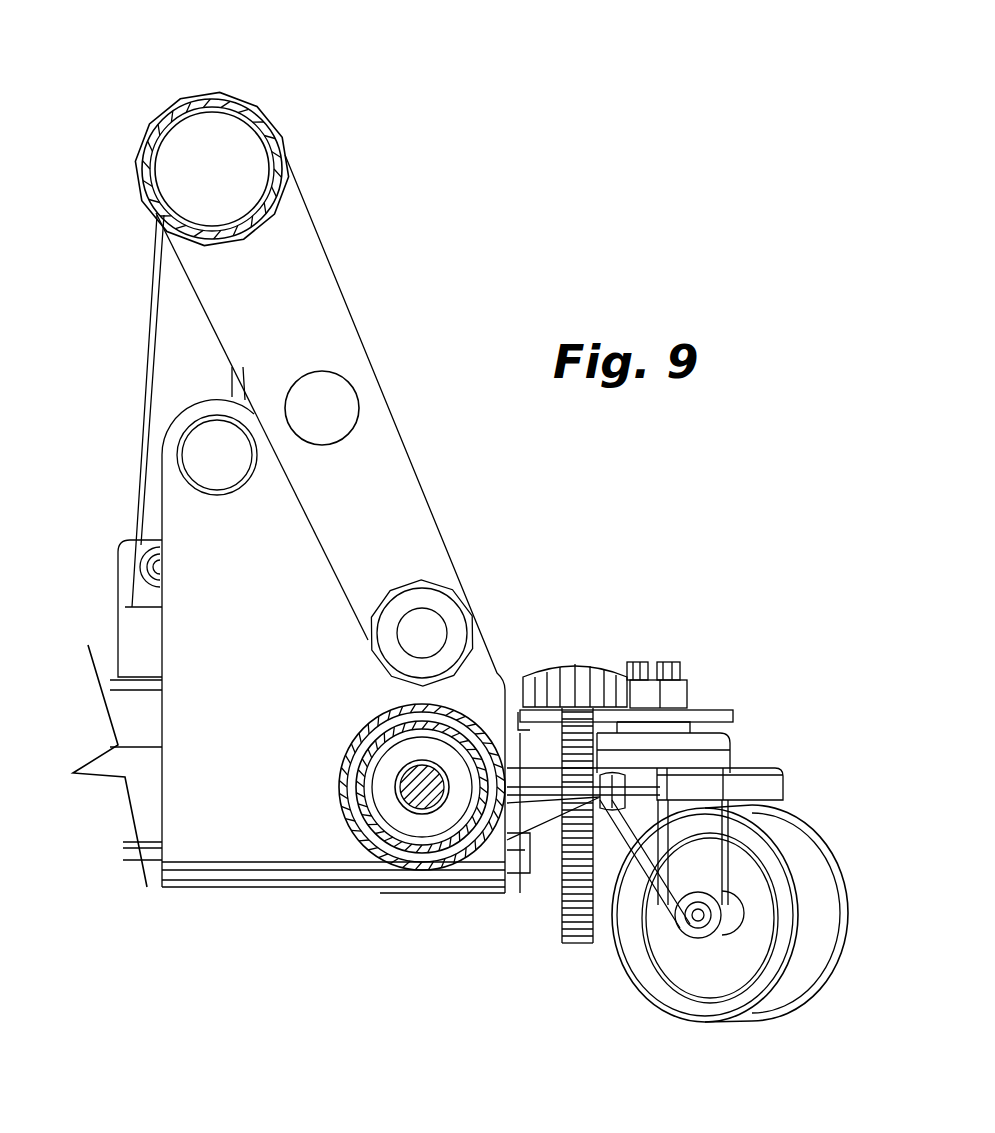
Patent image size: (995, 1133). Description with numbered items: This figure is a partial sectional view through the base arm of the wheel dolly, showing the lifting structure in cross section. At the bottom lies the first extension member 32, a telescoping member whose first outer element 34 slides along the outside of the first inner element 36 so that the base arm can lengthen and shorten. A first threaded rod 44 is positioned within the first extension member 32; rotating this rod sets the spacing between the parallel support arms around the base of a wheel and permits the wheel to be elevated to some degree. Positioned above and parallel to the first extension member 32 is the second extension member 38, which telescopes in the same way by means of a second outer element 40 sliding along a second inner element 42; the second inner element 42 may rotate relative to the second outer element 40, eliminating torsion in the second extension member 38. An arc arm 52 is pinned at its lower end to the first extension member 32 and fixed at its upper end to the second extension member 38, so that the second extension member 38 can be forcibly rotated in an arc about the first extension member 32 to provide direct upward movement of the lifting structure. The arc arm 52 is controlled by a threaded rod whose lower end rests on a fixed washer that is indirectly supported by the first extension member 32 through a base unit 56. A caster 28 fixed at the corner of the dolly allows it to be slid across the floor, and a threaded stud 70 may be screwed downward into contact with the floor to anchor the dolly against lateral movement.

The caster 28 is at (790, 833).
The first extension member 32 is at (463, 712).
The first outer element 34 is at (353, 737).
The first inner element 36 is at (372, 790).
The second extension member 38 is at (236, 98).
The second outer element 40 is at (274, 133).
The second inner element 42 is at (268, 180).
The first threaded rod 44 is at (423, 805).
The arc arm 52 is at (325, 318).
The base unit 56 is at (187, 522).
The threaded stud 70 is at (572, 902).